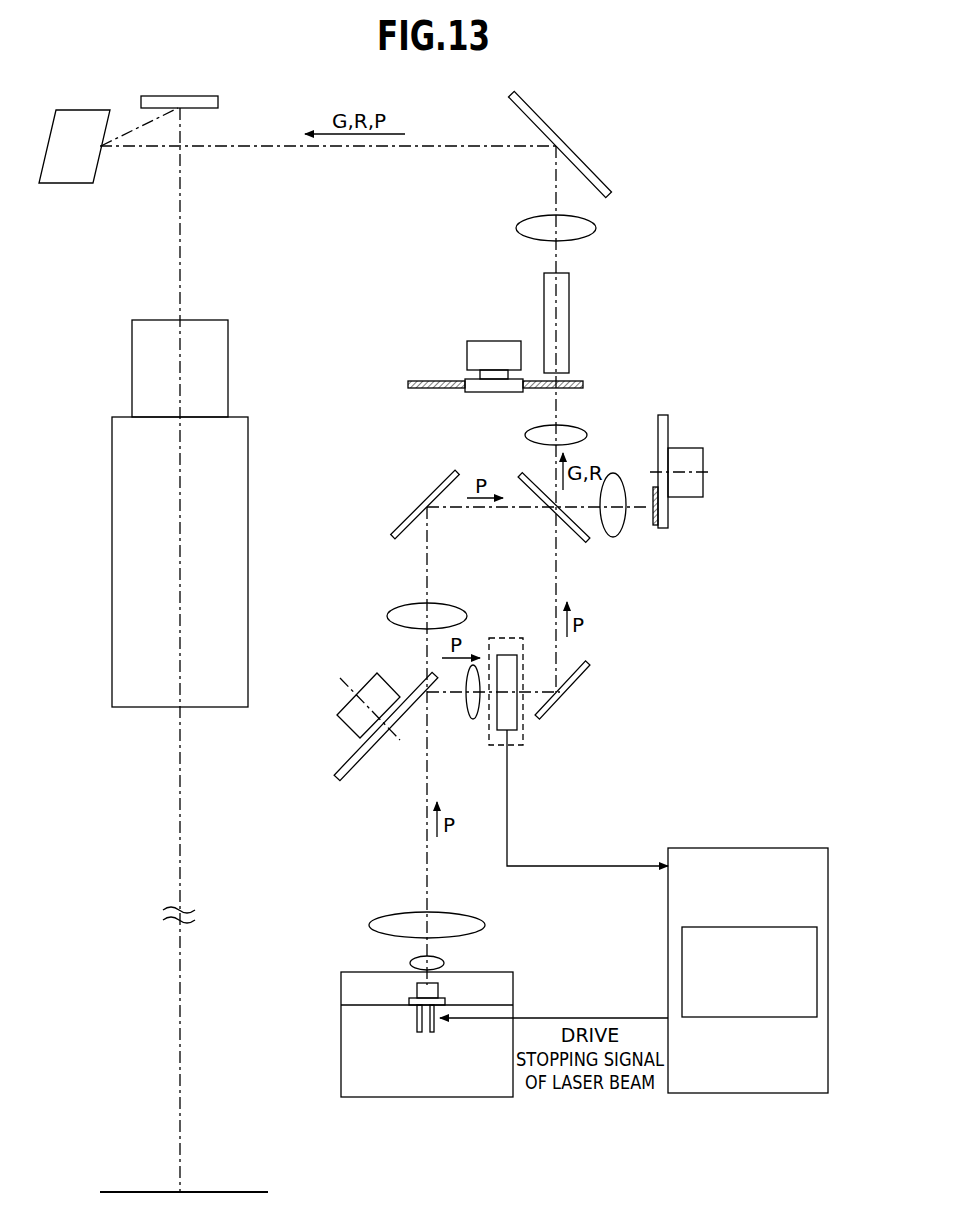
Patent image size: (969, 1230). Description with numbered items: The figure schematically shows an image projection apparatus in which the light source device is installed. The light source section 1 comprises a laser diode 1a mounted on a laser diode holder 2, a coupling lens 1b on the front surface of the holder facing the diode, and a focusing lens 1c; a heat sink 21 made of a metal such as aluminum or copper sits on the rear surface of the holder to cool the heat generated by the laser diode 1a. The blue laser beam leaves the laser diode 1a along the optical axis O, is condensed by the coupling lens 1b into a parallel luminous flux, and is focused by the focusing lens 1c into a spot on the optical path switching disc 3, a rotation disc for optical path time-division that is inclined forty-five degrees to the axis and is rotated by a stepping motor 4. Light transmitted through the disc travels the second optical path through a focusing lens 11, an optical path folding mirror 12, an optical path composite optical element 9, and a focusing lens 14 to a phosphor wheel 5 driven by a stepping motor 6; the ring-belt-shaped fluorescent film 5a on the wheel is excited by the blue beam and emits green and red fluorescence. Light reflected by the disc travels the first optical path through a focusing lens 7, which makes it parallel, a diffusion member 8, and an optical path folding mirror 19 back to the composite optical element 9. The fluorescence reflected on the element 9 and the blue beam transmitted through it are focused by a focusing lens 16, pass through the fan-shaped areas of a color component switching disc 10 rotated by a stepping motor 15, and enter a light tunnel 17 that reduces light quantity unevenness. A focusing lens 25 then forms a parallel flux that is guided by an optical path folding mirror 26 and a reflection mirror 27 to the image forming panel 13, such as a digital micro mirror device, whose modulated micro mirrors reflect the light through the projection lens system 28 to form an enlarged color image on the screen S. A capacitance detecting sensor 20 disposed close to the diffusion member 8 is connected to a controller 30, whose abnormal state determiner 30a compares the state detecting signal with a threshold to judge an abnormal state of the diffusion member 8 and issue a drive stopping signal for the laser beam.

The light source section 1 is at (310, 1022).
The laser diode 1a is at (417, 993).
The coupling lens 1b is at (410, 965).
The focusing lens 1c is at (368, 925).
The laser diode holder 2 is at (493, 990).
The optical path switching disc 3 is at (338, 765).
The stepping motor 4 is at (340, 715).
The phosphor wheel 5 is at (672, 533).
The fluorescent film 5a is at (655, 523).
The stepping motor 6 is at (695, 482).
The focusing lens 7 is at (472, 718).
The diffusion member 8 is at (513, 730).
The optical path composite optical element 9 is at (522, 475).
The color component switching disc 10 is at (445, 385).
The focusing lens 11 is at (398, 605).
The optical path folding mirror 12 is at (407, 517).
The image forming panel 13 is at (178, 96).
The focusing lens 14 is at (613, 475).
The stepping motor 15 is at (498, 341).
The focusing lens 16 is at (525, 435).
The light tunnel 17 is at (570, 303).
The optical path folding mirror 19 is at (578, 683).
The capacitance detecting sensor 20 is at (508, 638).
The heat sink 21 is at (367, 1075).
The focusing lens 25 is at (516, 228).
The optical path folding mirror 26 is at (553, 122).
The reflection mirror 27 is at (89, 110).
The projection lens system 28 is at (248, 428).
The controller 30 is at (708, 848).
The abnormal state determiner 30a is at (773, 927).
The optical axis O is at (427, 853).
The screen S is at (240, 1192).